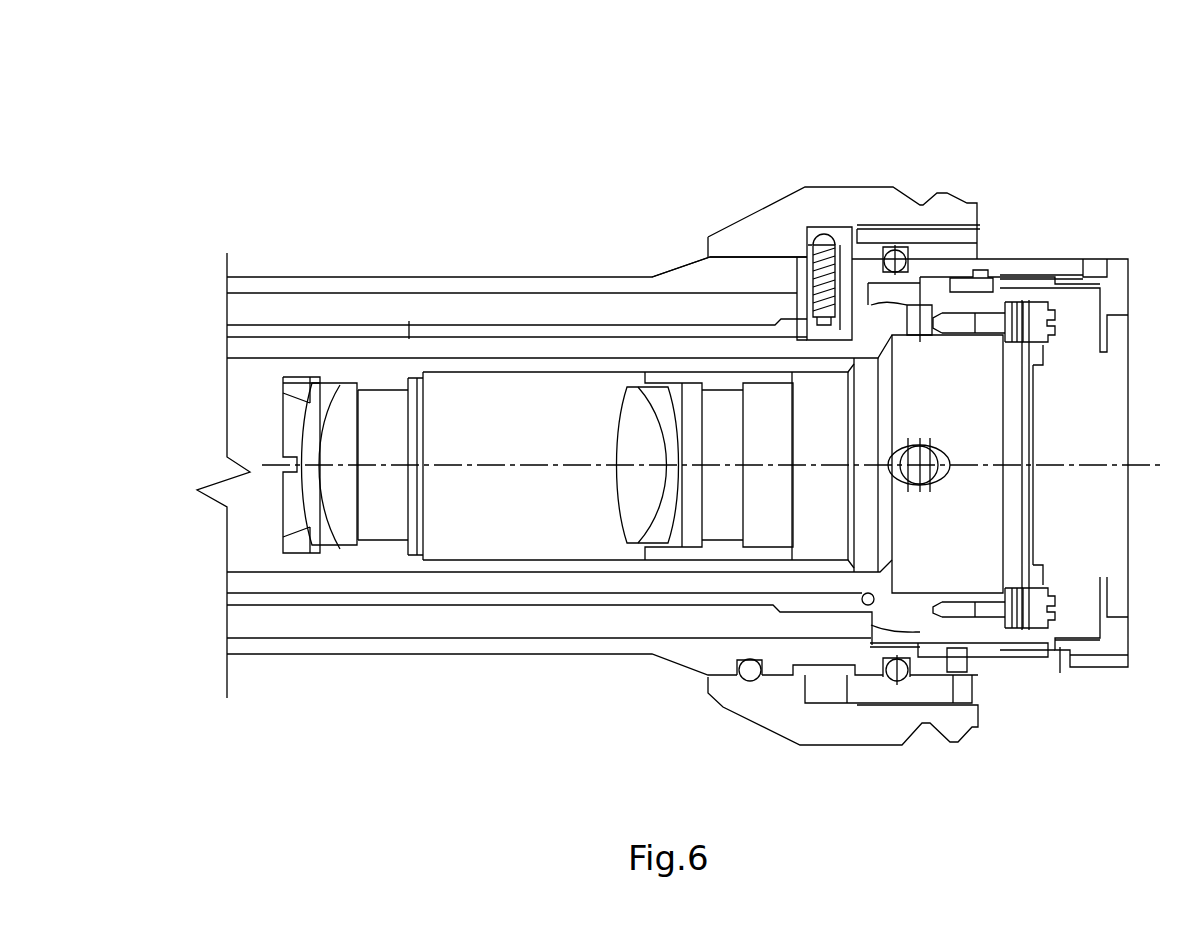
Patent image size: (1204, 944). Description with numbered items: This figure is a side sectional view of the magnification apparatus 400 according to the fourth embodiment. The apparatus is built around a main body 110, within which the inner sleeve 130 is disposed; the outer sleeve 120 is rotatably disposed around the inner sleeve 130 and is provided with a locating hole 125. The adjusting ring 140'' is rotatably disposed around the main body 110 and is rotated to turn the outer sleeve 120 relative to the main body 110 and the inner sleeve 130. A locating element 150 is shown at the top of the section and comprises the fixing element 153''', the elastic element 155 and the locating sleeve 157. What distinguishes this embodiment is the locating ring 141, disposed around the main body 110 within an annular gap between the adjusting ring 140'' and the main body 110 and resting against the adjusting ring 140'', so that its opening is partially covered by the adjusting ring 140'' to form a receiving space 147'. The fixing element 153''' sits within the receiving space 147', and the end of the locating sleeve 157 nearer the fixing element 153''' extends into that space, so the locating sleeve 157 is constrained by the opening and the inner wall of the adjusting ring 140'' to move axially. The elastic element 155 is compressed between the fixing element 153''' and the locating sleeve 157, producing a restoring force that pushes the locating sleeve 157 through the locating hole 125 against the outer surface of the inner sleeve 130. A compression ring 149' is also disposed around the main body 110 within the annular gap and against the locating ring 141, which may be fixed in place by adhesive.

The magnification apparatus 400 is at (235, 100).
The main body 110 is at (690, 285).
The outer sleeve 120 is at (570, 330).
The locating hole 125 is at (780, 256).
The inner sleeve 130 is at (727, 350).
The adjusting ring 140'' is at (857, 194).
The locating ring 141 is at (865, 245).
The receiving space 147' is at (958, 206).
The compression ring 149' is at (1012, 257).
The locating element 150 is at (852, 77).
The fixing element 153''' is at (843, 217).
The elastic element 155 is at (797, 258).
The locating sleeve 157 is at (802, 250).